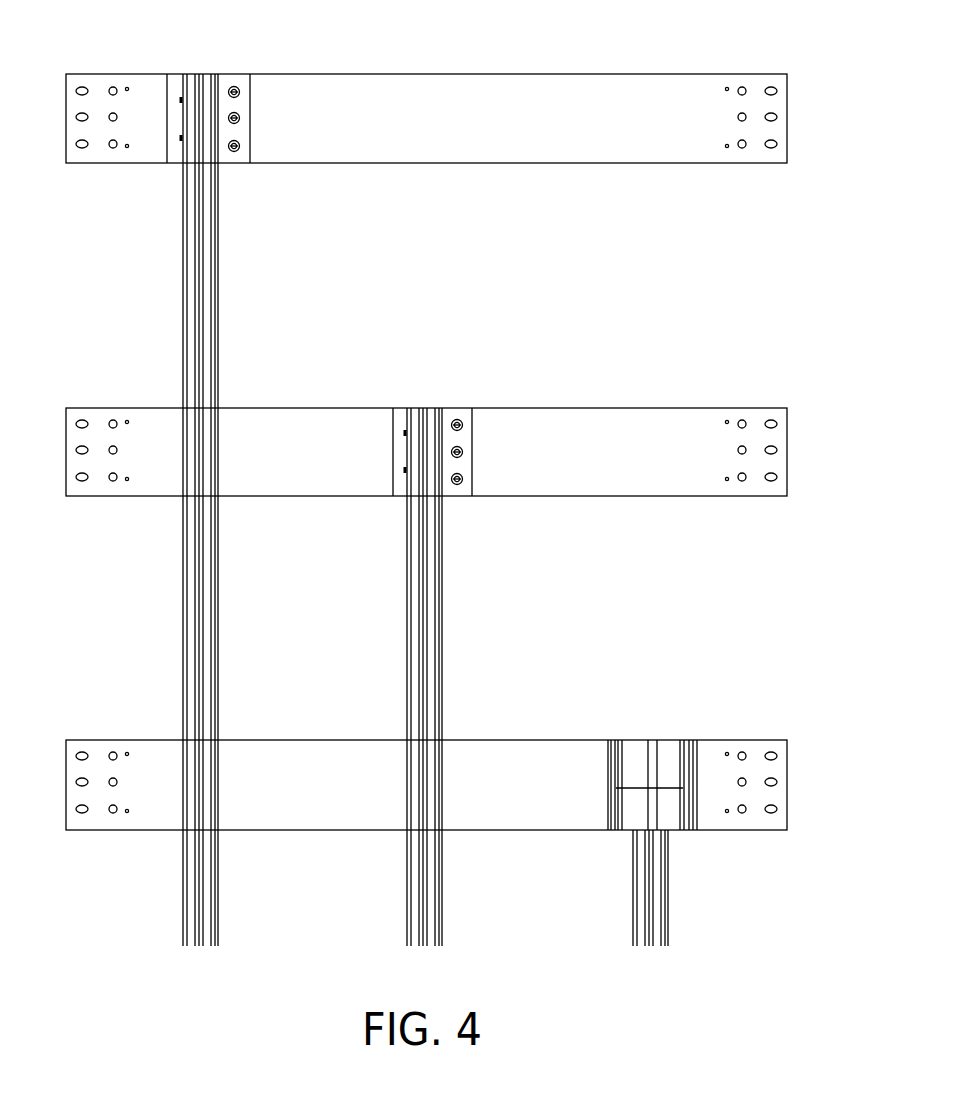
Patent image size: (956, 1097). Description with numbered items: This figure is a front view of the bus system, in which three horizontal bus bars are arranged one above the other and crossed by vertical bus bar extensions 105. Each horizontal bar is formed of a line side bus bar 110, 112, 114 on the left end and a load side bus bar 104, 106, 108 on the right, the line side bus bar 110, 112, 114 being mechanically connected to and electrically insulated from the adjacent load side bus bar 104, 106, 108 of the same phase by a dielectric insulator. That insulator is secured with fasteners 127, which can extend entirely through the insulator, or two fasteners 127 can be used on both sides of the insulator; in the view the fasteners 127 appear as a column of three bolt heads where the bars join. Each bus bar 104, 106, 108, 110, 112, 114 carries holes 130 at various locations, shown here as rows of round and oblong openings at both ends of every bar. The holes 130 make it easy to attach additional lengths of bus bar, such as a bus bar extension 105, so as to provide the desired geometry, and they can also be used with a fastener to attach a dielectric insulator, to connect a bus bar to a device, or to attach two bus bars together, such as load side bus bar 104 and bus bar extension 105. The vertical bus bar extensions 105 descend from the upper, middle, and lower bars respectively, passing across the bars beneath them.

The load side bus bar 104 is at (643, 100).
The load side bus bar 106 is at (668, 443).
The load side bus bar 108 is at (712, 747).
The line side bus bar 110 is at (123, 108).
The line side bus bar 112 is at (123, 448).
The line side bus bar 114 is at (130, 776).
The bus bar extension 105 is at (422, 568).
The fastener 127 is at (463, 479).
The holes 130 is at (770, 152).